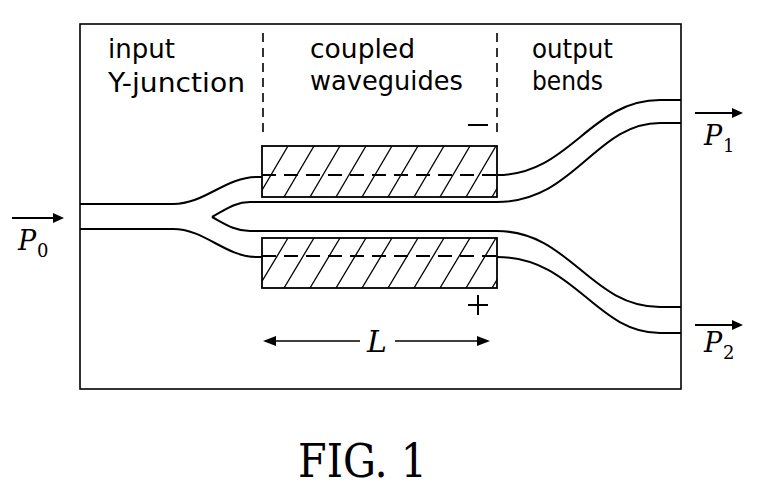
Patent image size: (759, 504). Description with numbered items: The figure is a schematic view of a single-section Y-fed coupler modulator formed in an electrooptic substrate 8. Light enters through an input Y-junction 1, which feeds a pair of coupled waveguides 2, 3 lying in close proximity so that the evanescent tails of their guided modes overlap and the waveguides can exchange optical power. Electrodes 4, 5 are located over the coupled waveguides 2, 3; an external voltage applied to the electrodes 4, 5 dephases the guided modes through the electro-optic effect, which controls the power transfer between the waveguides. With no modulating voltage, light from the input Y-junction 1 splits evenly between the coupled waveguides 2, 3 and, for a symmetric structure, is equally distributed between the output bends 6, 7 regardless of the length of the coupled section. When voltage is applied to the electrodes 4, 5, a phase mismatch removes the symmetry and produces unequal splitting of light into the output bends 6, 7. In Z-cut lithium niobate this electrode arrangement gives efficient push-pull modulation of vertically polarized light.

The input Y-junction 1 is at (158, 230).
The coupled waveguide 2 is at (331, 176).
The coupled waveguide 3 is at (328, 255).
The electrode 4 is at (397, 146).
The electrode 5 is at (395, 288).
The output bend 6 is at (602, 150).
The output bend 7 is at (603, 282).
The electrooptic substrate 8 is at (80, 91).